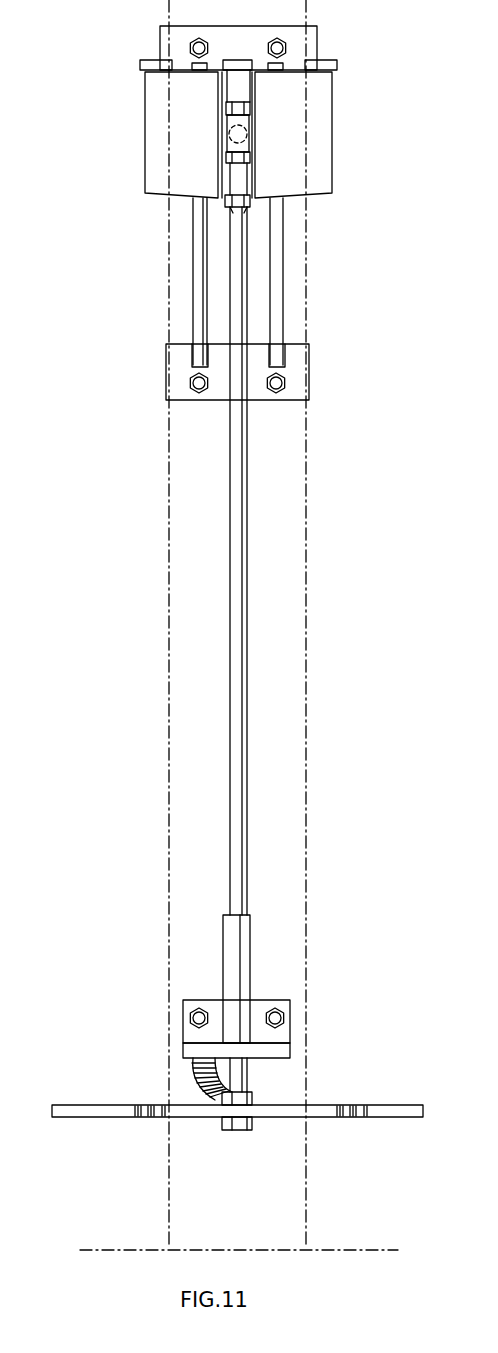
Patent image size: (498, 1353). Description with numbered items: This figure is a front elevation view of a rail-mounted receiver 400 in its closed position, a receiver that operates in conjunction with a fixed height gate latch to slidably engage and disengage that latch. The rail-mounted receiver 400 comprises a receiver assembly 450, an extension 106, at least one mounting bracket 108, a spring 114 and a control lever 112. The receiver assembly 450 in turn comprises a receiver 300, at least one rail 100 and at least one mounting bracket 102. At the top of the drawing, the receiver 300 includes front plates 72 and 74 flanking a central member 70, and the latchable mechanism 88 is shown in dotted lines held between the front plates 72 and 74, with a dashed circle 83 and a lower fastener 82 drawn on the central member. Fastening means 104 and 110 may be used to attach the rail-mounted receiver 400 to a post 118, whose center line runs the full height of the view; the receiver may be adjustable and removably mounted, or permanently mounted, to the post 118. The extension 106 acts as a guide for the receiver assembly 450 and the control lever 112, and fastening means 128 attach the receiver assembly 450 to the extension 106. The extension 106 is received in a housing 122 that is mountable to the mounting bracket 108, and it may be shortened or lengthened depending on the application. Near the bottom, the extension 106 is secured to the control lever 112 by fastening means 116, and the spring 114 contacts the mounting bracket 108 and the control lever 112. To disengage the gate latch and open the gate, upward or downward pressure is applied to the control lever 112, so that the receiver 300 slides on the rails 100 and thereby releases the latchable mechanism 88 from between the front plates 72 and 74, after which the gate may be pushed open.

The center stem assembly 70 is at (242, 92).
The front plate 72 is at (192, 152).
The front plate 74 is at (312, 177).
The lower nut 82 is at (243, 165).
The pivot hole 83 is at (250, 122).
The latchable mechanism 88 is at (222, 148).
The rail 100 is at (198, 285).
The mounting bracket 102 is at (176, 37).
The means of fastening 104 is at (190, 50).
The extension 106 is at (230, 497).
The mounting bracket 108 is at (280, 1035).
The means of fastening 110 is at (285, 1018).
The control lever 112 is at (313, 1112).
The spring 114 is at (198, 1085).
The fastening means 116 is at (254, 1098).
The post 118 is at (210, 570).
The housing 122 is at (240, 970).
The fastening means 128 is at (220, 93).
The receiver 300 is at (140, 202).
The rail-mounted receiver 400 is at (140, 660).
The receiver assembly 450 is at (335, 286).